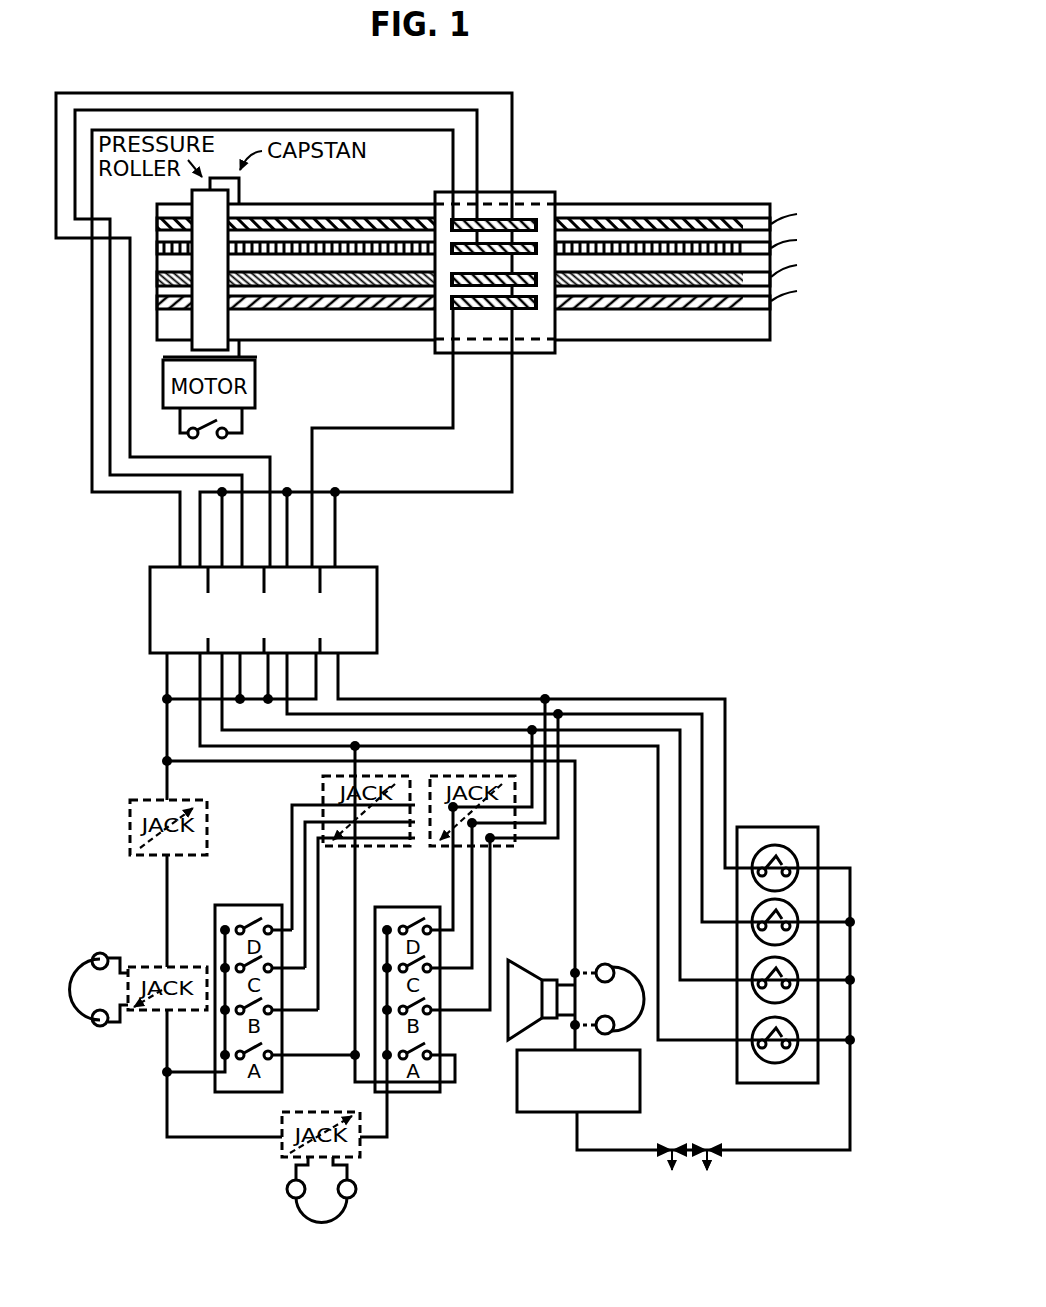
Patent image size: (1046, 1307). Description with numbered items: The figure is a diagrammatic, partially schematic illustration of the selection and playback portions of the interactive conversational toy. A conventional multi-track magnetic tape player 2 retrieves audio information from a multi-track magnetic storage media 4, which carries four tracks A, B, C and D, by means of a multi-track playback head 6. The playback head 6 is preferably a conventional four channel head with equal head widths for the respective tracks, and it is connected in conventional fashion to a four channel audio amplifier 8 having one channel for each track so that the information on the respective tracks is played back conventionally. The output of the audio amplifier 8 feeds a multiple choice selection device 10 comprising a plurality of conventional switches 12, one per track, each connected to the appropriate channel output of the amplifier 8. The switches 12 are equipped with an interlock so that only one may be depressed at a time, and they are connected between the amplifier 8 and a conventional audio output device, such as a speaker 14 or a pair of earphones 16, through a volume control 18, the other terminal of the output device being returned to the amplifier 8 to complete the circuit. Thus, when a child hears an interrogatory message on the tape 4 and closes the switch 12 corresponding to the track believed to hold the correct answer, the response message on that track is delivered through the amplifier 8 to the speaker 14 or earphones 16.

The multi-track magnetic tape player 2 is at (640, 164).
The multi-track magnetic storage media 4 is at (658, 350).
The multi-track playback head 6 is at (522, 192).
The four channel audio amplifier 8 is at (377, 628).
The multiple choice selection device 10 is at (800, 827).
The switch 12 is at (793, 861).
The speaker 14 is at (508, 1035).
The pair of earphones 16 is at (100, 1030).
The volume control 18 is at (640, 1090).